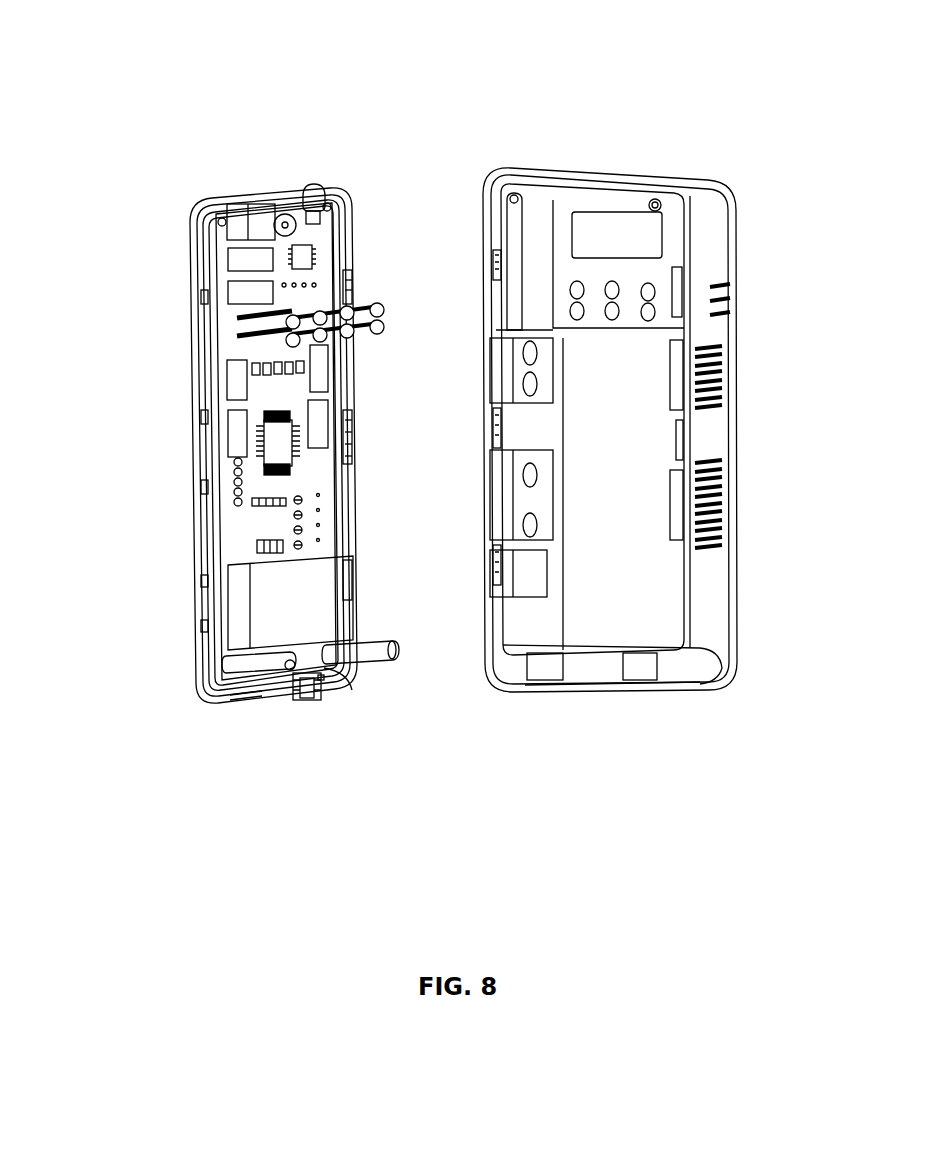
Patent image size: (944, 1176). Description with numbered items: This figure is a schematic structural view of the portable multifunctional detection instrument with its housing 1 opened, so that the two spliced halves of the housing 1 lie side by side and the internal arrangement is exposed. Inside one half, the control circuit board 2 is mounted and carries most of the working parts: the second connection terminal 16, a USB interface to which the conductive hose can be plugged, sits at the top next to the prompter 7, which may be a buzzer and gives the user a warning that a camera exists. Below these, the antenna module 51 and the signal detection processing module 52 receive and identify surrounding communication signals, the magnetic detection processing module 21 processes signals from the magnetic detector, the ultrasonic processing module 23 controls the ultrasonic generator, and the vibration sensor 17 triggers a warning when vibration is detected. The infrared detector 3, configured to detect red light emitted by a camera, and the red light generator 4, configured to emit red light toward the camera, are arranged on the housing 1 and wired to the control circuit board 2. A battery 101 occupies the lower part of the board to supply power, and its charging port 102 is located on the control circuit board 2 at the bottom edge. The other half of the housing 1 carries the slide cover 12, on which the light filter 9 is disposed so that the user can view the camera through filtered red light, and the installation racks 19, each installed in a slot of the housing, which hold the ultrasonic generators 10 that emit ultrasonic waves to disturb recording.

The housing 1 is at (627, 130).
The control circuit board 2 is at (245, 525).
The infrared detector 3 is at (330, 184).
The red light generator 4 is at (380, 312).
The prompter 7 is at (283, 190).
The light filter 9 is at (623, 230).
The ultrasonic generator 10 is at (532, 475).
The slide cover 12 is at (720, 237).
The second connection terminal 16 is at (250, 207).
The vibration sensor 17 is at (313, 378).
The installation rack 19 is at (537, 368).
The magnetic detection processing module 21 is at (240, 378).
The ultrasonic processing module 23 is at (238, 432).
The antenna module 51 is at (250, 258).
The signal detection processing module 52 is at (240, 293).
The battery 101 is at (268, 605).
The charging port 102 is at (313, 688).